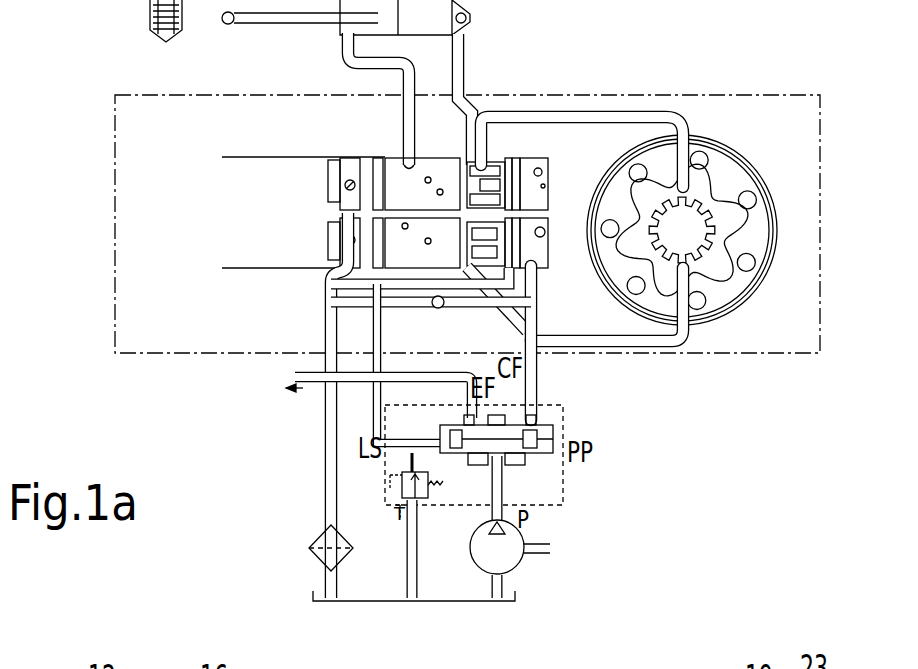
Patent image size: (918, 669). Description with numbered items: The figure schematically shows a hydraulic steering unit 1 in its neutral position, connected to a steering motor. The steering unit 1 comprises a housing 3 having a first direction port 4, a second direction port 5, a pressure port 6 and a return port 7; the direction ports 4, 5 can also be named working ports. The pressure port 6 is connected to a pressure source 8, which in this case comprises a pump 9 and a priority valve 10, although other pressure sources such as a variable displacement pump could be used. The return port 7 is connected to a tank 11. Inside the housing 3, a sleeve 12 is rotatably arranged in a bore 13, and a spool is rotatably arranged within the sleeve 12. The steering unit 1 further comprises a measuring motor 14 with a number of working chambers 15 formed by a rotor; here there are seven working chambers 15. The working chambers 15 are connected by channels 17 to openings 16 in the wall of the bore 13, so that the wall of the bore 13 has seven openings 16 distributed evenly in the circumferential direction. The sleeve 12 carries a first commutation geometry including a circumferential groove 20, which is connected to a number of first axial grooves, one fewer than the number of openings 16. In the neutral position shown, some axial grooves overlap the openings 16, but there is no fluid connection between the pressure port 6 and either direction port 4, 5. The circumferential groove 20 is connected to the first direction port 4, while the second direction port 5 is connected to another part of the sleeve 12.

The hydraulic steering unit 1 is at (796, 50).
The housing 3 is at (818, 166).
The first direction port 4 is at (455, 86).
The second direction port 5 is at (400, 92).
The pressure port 6 is at (540, 360).
The return port 7 is at (320, 355).
The pressure source 8 is at (516, 453).
The pump 9 is at (495, 558).
The priority valve 10 is at (555, 430).
The tank 11 is at (364, 608).
The sleeve 12 is at (383, 160).
The bore 13 is at (278, 253).
The measuring motor 14 is at (776, 238).
The working chambers 15 is at (690, 186).
The openings 16 is at (520, 170).
The channels 17 is at (592, 106).
The circumferential groove 20 is at (460, 180).